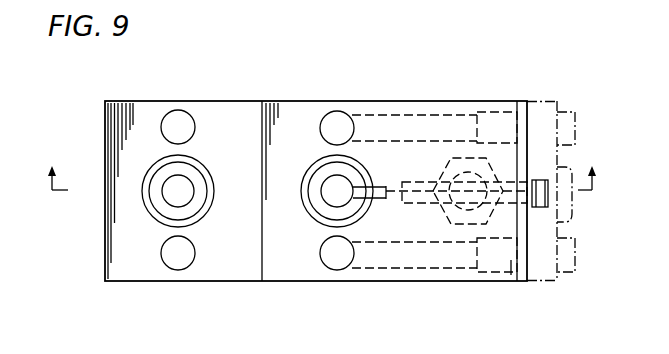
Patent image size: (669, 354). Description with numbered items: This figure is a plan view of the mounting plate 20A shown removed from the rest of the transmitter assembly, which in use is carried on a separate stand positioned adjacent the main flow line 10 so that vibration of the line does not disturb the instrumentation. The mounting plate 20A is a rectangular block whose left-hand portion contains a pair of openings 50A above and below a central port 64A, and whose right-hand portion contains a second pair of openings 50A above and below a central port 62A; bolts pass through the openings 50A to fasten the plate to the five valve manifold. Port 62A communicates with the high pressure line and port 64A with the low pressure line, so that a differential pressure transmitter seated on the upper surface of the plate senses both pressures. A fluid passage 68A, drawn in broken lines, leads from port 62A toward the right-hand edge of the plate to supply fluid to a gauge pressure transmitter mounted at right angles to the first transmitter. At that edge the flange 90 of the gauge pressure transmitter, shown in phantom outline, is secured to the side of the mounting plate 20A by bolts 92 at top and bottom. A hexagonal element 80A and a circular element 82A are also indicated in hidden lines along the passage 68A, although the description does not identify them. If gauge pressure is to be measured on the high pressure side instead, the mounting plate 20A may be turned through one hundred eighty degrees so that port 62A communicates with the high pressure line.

The main flow line 10 is at (321, 166).
The mounting plate 20A is at (210, 283).
The openings 50A is at (188, 117).
The port 62A is at (326, 203).
The port 64A is at (186, 200).
The fluid passage 68A is at (388, 185).
The hex nut 80A is at (486, 156).
The bolt shank 82A is at (458, 172).
The flange 90 is at (548, 284).
The bolts 92 is at (576, 118).